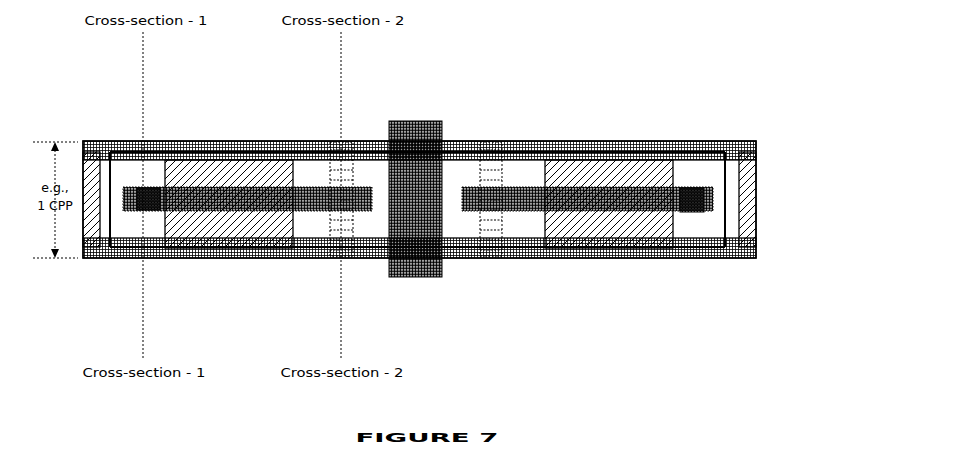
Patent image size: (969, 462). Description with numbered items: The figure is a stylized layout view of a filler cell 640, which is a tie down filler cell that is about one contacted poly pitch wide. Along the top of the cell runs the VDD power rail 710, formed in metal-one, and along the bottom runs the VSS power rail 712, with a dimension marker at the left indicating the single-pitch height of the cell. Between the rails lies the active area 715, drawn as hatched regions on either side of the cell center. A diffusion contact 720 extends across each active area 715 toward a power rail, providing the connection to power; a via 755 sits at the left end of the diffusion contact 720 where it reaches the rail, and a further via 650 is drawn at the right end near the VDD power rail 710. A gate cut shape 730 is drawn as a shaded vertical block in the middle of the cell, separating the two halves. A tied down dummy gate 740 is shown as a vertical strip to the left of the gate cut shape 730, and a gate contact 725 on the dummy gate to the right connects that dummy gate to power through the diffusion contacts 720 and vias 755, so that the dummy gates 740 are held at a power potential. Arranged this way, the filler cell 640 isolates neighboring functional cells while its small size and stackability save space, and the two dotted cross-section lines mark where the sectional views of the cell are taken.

The filler cell 640 is at (531, 328).
The VDD power rail 710 is at (745, 144).
The VSS power rail 712 is at (98, 260).
The active area 715 is at (586, 230).
The diffusion contact 720 is at (607, 196).
The gate contact 725 is at (476, 232).
The gate cut shape 730 is at (426, 116).
The dummy gate 740 is at (319, 168).
The via 755 is at (137, 184).
The via 650 is at (697, 214).